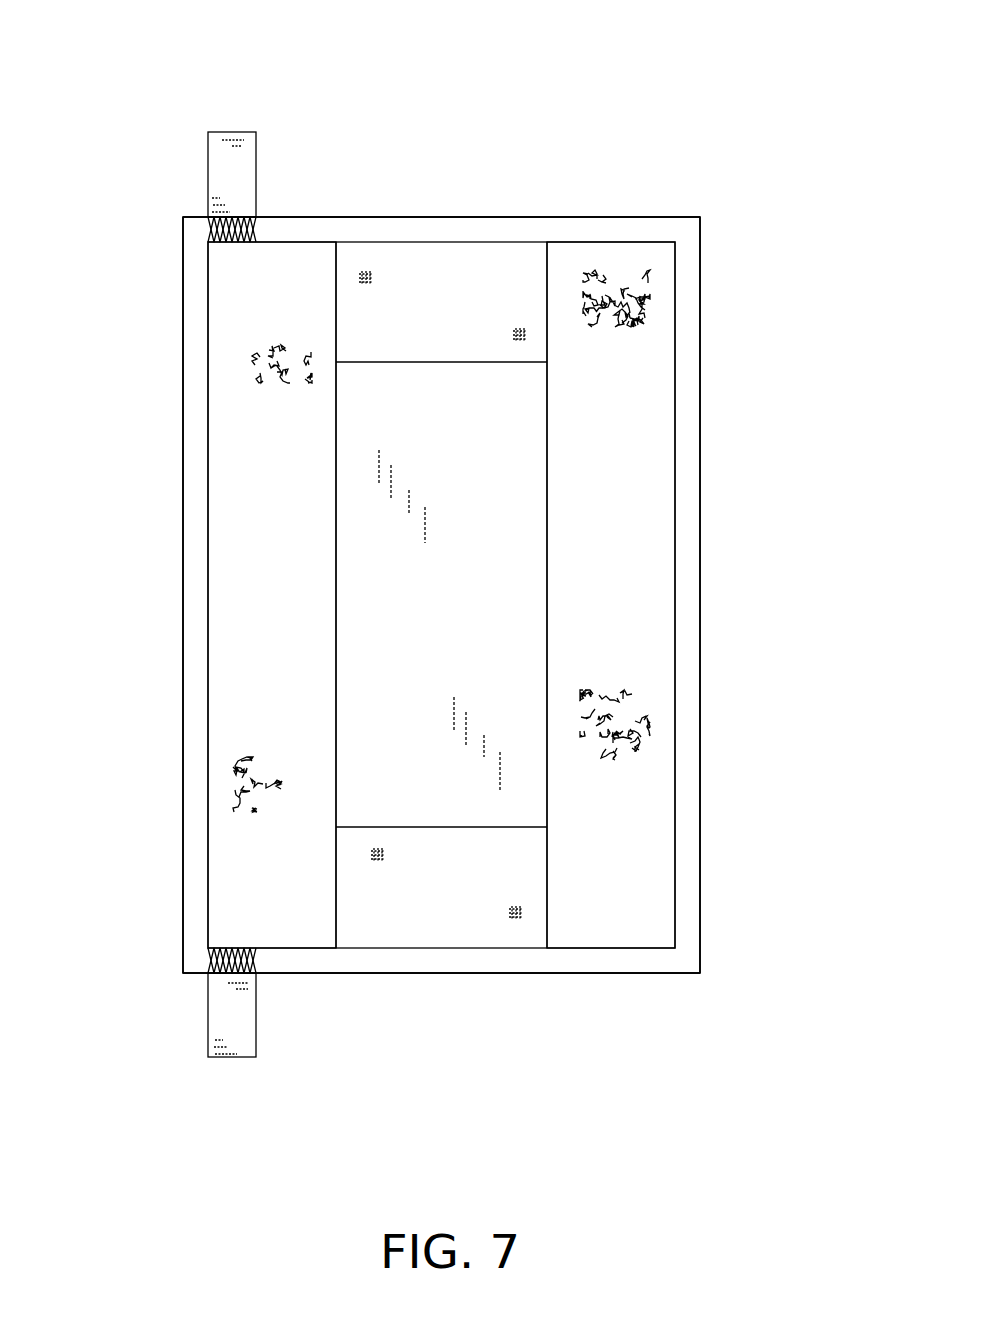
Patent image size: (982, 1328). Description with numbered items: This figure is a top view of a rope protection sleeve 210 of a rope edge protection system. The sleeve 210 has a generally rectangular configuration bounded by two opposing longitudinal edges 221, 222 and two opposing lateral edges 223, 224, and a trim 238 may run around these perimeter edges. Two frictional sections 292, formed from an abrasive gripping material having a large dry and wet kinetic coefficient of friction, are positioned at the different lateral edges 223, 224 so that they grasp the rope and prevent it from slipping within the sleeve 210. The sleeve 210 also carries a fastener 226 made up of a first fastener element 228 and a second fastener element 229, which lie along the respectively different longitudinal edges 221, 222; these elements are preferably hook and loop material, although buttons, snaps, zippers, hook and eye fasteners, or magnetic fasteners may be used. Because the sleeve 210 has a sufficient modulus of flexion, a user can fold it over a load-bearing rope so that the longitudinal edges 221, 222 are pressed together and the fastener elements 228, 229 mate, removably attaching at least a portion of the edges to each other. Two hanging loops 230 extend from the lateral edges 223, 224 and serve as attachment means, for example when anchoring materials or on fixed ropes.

The rope protection sleeve 210 is at (844, 100).
The longitudinal edge 221 is at (183, 585).
The longitudinal edge 222 is at (700, 607).
The lateral edge 223 is at (468, 217).
The lateral edge 224 is at (443, 973).
The fastener 226 is at (308, 461).
The first fastener element 228 is at (267, 522).
The second fastener element 229 is at (640, 523).
The hanging loop 230 is at (250, 117).
The trim 238 is at (697, 973).
The frictional section 292 is at (470, 312).